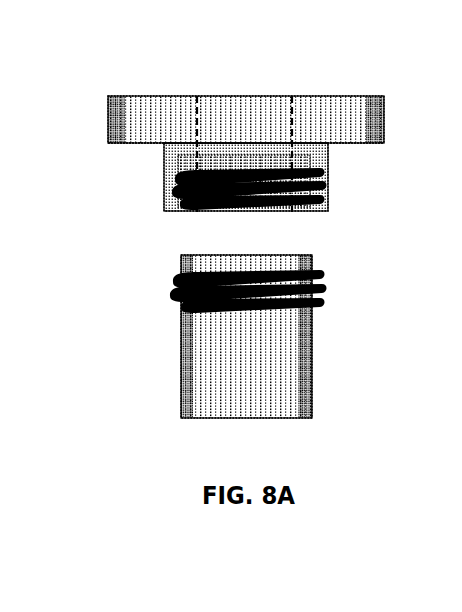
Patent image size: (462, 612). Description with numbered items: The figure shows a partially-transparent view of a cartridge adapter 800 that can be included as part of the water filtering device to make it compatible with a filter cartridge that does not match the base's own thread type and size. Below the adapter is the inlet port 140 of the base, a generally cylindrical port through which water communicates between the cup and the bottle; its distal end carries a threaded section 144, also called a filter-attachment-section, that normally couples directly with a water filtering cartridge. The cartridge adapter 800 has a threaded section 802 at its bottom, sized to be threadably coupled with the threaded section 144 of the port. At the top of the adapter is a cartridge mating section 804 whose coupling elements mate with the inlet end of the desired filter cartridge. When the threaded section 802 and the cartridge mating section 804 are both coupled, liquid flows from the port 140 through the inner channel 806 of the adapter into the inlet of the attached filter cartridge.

The cartridge adapter 800 is at (123, 92).
The threaded section 802 is at (176, 190).
The cartridge mating section 804 is at (378, 96).
The inner channel 806 is at (293, 96).
The inlet port 140 is at (182, 348).
The threaded section 144 is at (176, 276).